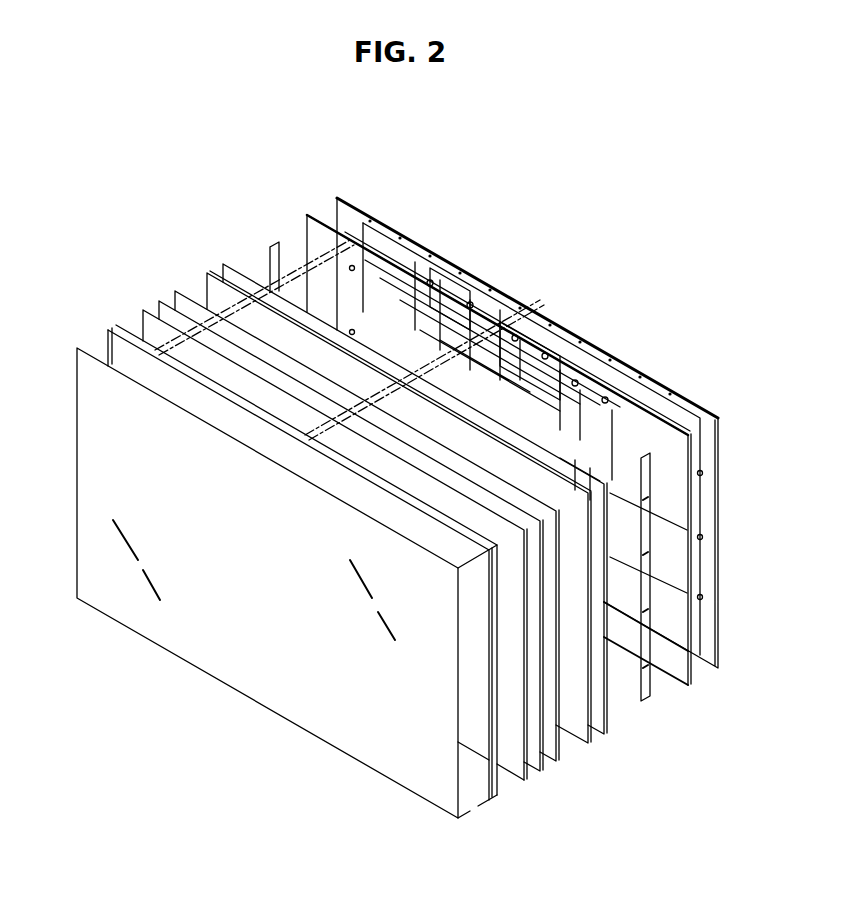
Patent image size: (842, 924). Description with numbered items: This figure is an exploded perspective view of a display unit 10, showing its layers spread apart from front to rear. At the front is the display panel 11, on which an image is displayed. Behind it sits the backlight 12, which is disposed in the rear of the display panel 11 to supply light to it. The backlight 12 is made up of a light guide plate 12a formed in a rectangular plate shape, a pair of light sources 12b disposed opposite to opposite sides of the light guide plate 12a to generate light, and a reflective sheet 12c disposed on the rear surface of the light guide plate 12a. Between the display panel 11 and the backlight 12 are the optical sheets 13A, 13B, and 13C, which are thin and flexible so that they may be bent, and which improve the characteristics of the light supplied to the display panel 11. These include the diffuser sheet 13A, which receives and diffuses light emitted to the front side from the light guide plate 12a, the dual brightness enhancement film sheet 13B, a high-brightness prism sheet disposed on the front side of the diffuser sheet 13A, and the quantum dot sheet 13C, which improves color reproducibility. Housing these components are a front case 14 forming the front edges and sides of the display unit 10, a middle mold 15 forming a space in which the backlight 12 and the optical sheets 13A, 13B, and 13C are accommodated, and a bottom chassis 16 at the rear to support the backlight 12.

The display unit 10 is at (541, 206).
The display panel 11 is at (388, 767).
The backlight 12 is at (697, 760).
The light guide plate 12a is at (589, 744).
The light sources 12b is at (269, 249).
The reflective sheet 12c is at (605, 734).
The diffuser sheet 13A is at (556, 761).
The dual brightness enhancement film sheet 13B is at (538, 771).
The quantum dot sheet 13C is at (522, 780).
The front case 14 is at (108, 325).
The middle mold 15 is at (307, 210).
The bottom chassis 16 is at (337, 196).